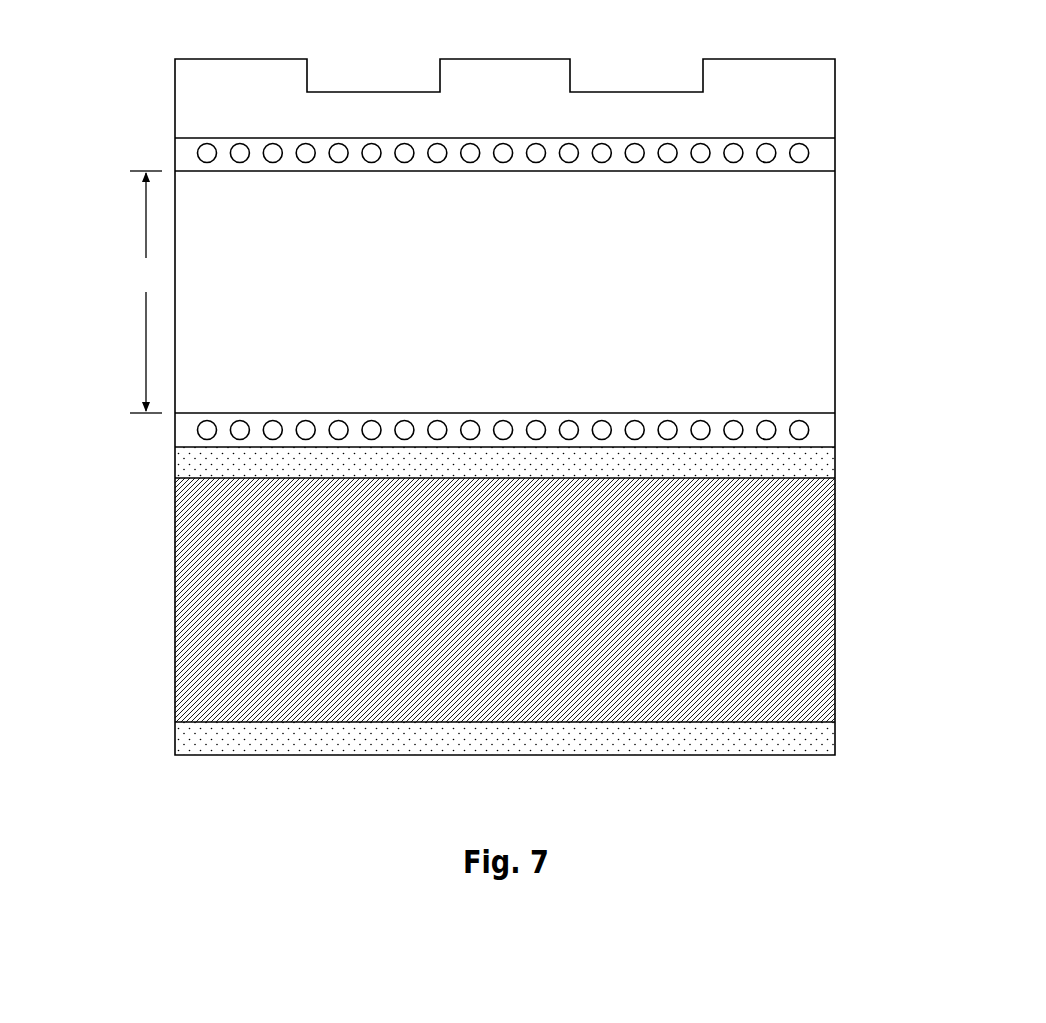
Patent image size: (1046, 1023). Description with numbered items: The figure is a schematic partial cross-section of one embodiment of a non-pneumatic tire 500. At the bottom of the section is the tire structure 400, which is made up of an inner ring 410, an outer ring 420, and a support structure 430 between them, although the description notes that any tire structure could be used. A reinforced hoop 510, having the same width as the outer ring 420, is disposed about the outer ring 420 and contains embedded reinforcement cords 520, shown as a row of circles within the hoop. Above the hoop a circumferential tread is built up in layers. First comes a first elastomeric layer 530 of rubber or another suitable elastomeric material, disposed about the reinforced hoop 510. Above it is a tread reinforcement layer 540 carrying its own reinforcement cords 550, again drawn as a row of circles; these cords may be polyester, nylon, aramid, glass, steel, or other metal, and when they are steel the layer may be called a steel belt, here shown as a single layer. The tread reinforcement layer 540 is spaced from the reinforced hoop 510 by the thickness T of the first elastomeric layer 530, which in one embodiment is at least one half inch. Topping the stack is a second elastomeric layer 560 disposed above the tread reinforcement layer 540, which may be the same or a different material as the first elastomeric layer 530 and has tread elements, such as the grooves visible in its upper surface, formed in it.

The tire structure 400 is at (419, 622).
The inner ring 410 is at (192, 740).
The outer ring 420 is at (190, 470).
The support structure 430 is at (200, 575).
The non-pneumatic tire 500 is at (478, 258).
The reinforced hoop 510 is at (823, 428).
The reinforcement cords 520 is at (806, 423).
The first elastomeric layer 530 is at (817, 305).
The tread reinforcement layer 540 is at (828, 153).
The reinforcement cords 550 is at (574, 147).
The second elastomeric layer 560 is at (808, 107).